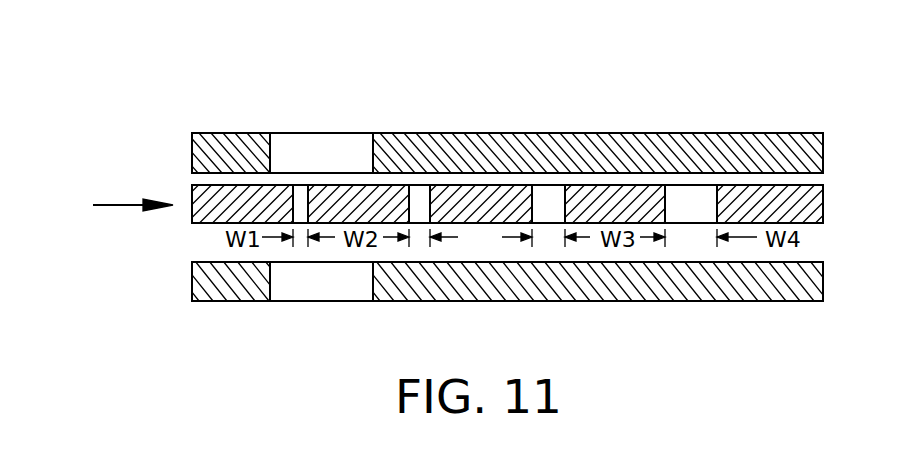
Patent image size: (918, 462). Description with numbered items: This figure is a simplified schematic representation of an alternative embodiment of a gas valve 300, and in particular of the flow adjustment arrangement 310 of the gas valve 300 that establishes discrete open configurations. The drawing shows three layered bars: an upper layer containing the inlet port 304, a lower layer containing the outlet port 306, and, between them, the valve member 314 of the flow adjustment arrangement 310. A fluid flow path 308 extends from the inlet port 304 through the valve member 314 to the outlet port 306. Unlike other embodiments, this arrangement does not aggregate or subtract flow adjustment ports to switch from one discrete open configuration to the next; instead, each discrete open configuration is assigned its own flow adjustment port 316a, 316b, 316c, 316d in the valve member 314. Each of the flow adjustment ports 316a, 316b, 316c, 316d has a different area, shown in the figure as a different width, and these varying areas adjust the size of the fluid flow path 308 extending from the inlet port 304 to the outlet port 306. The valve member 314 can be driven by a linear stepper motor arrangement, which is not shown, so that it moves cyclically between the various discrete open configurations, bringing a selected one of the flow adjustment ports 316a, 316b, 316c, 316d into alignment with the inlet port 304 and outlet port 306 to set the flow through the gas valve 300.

The gas valve 300 is at (142, 150).
The inlet port 304 is at (507, 94).
The outlet port 306 is at (349, 314).
The fluid flow path 308 is at (352, 148).
The flow adjustment arrangement 310 is at (588, 62).
The valve member 314 is at (505, 143).
The flow adjustment port 316a is at (300, 198).
The flow adjustment port 316b is at (422, 196).
The flow adjustment port 316c is at (553, 192).
The flow adjustment port 316d is at (692, 190).